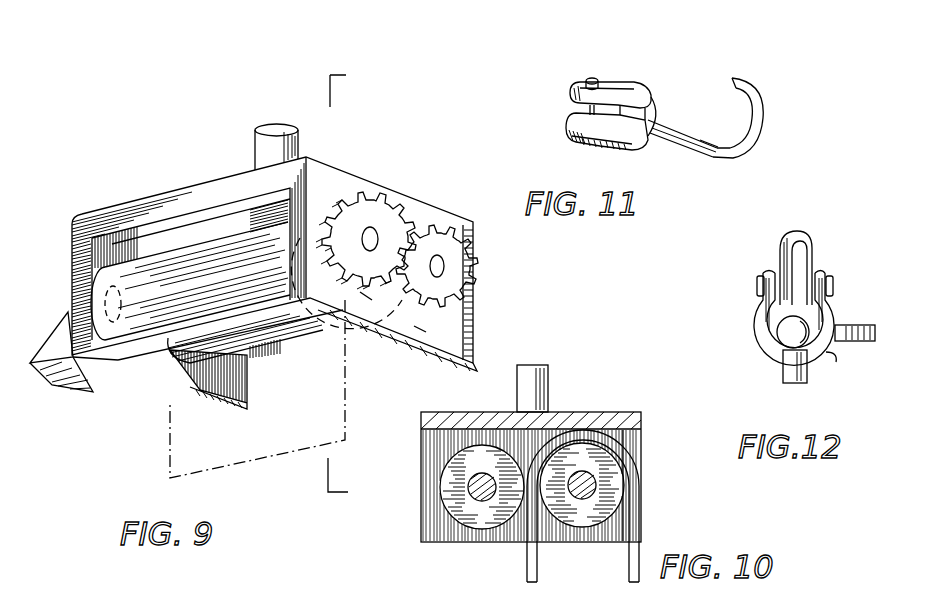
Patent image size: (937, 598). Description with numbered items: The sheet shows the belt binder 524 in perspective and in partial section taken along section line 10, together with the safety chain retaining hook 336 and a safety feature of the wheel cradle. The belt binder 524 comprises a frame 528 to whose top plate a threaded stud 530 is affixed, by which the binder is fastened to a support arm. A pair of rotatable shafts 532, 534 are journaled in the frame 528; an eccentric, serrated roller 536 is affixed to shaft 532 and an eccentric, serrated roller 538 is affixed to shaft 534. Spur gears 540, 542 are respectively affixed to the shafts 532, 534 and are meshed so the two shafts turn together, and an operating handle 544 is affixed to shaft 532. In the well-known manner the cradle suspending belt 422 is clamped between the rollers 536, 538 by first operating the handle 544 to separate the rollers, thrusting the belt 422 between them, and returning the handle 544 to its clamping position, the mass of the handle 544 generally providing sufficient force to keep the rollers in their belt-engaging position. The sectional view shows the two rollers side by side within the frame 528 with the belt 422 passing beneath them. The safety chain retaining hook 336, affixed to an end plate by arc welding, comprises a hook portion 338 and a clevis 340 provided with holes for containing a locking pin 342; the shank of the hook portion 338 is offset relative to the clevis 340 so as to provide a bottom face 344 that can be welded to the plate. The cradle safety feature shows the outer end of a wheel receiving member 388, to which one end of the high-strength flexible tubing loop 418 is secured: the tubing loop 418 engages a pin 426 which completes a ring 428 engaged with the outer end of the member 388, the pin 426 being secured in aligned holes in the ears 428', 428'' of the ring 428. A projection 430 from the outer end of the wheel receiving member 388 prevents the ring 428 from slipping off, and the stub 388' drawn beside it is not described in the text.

In FIG. 9, the section line 10 is at (358, 276).
In FIG. 9, the belt binder 524 is at (433, 190).
In FIG. 10, the belt binder 524 is at (412, 538).
In FIG. 9, the threaded stud 530 is at (257, 150).
In FIG. 10, the threaded stud 530 is at (546, 384).
In FIG. 9, the rotatable shaft 532 is at (372, 227).
In FIG. 10, the rotatable shaft 532 is at (468, 488).
In FIG. 9, the rotatable shaft 534 is at (441, 258).
In FIG. 10, the rotatable shaft 534 is at (606, 495).
In FIG. 9, the eccentric, serrated roller 536 is at (127, 358).
In FIG. 10, the eccentric, serrated roller 536 is at (446, 460).
In FIG. 9, the eccentric, serrated roller 538 is at (263, 342).
In FIG. 10, the eccentric, serrated roller 538 is at (606, 476).
In FIG. 9, the spur gear 540 is at (366, 293).
In FIG. 9, the spur gear 542 is at (421, 328).
In FIG. 9, the operating handle 544 is at (56, 322).
In FIG. 9, the frame 528 is at (470, 322).
In FIG. 10, the frame 528 is at (632, 420).
In FIG. 9, the suspending belt 422 is at (172, 432).
In FIG. 10, the suspending belt 422 is at (530, 556).
In FIG. 11, the clevis 340 is at (634, 88).
In FIG. 11, the locking pin 342 is at (593, 78).
In FIG. 11, the bottom face 344 is at (656, 143).
In FIG. 11, the safety chain retaining hook 336 is at (686, 122).
In FIG. 11, the hook portion 338 is at (754, 98).
In FIG. 12, the pin 426 is at (818, 272).
In FIG. 12, the tubing loop 418 is at (786, 254).
In FIG. 12, the ear 428' is at (728, 287).
In FIG. 12, the ear 428'' is at (868, 274).
In FIG. 12, the wheel receiving member 388 is at (750, 352).
In FIG. 12, the stub shaft 388' is at (879, 311).
In FIG. 12, the projection 430 is at (798, 385).
In FIG. 12, the ring 428 is at (853, 368).